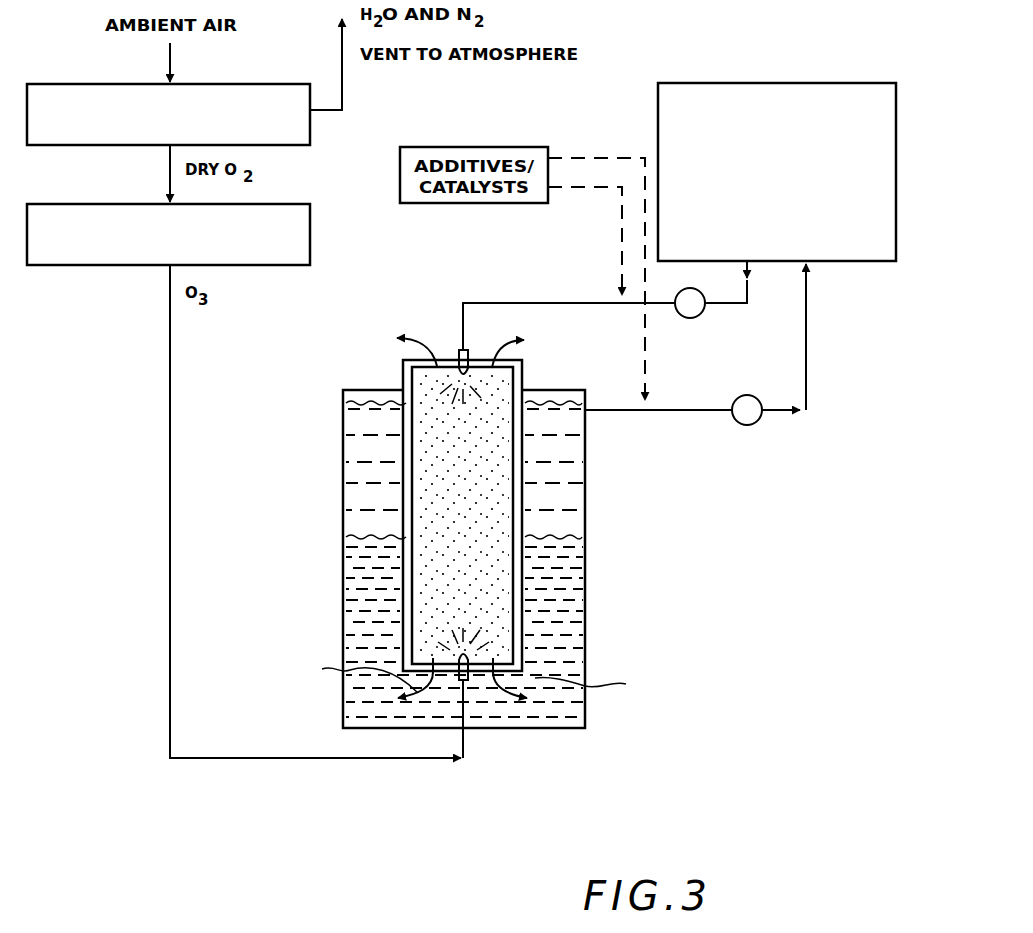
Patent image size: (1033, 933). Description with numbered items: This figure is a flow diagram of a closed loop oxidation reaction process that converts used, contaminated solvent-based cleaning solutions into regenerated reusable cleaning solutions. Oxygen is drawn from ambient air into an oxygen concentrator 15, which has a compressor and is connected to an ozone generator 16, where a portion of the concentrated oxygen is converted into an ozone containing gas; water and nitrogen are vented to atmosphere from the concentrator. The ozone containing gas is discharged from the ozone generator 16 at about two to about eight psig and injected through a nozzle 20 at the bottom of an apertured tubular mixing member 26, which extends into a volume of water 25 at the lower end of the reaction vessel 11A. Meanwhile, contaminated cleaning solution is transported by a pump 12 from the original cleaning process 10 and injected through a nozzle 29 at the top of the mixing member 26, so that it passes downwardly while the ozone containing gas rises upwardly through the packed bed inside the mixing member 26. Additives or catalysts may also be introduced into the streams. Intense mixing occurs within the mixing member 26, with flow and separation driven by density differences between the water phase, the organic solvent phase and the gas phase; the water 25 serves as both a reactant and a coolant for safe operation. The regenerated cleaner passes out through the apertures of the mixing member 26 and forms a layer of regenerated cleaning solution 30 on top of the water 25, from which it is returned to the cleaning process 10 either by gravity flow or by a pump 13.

The cleaning process 10 is at (737, 83).
The tank 11A is at (342, 450).
The pump 12 is at (700, 314).
The pump 13 is at (745, 395).
The oxygen concentrator 15 is at (264, 84).
The ozone generator 16 is at (292, 204).
The nozzle 20 is at (468, 673).
The water 25 is at (567, 627).
The tubular mixing member 26 is at (523, 567).
The nozzle 29 is at (437, 366).
The regenerated cleaning solution 30 is at (566, 498).